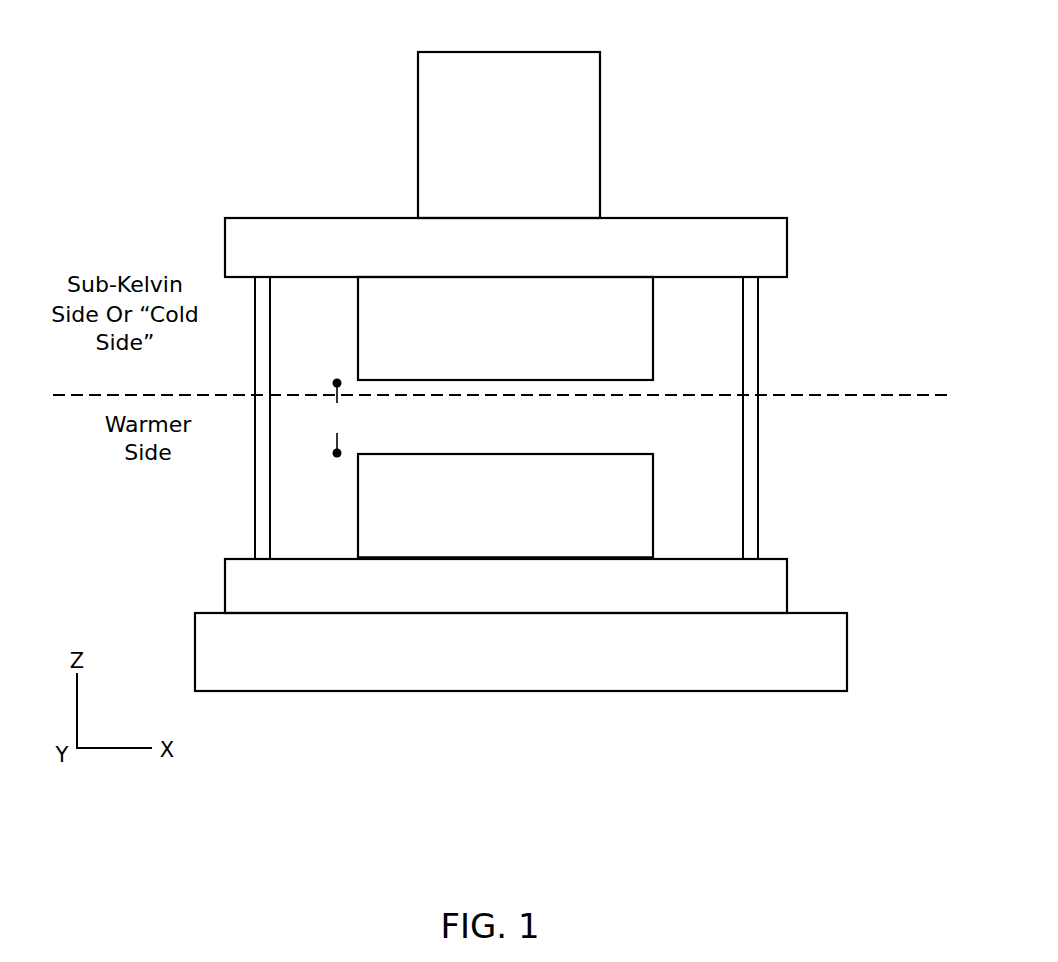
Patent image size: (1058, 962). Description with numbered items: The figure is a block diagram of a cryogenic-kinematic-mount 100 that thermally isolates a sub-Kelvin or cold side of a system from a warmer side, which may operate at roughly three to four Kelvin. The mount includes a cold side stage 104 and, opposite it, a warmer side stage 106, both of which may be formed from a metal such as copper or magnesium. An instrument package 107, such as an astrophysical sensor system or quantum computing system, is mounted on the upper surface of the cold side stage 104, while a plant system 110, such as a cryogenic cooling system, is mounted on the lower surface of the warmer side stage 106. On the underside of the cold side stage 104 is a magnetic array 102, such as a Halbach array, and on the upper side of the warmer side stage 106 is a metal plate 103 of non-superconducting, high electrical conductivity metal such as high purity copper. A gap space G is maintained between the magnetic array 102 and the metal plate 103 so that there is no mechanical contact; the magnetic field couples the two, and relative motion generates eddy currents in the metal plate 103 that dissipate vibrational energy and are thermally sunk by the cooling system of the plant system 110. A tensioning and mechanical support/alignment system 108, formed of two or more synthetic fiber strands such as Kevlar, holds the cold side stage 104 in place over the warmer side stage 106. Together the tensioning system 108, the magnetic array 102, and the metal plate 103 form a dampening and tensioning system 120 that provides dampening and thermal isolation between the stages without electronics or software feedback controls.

The cryogenic-kinematic-mount 100 is at (178, 107).
The magnetic array 102 is at (487, 338).
The metal plate 103 is at (487, 516).
The cold side stage 104 is at (490, 258).
The warmer side stage 106 is at (487, 600).
The instrument package 107 is at (490, 146).
The tensioning and mechanical support/alignment system 108 is at (758, 361).
The plant system 110 is at (501, 662).
The dampening and tensioning system 120 is at (816, 304).
The gap space G is at (336, 418).